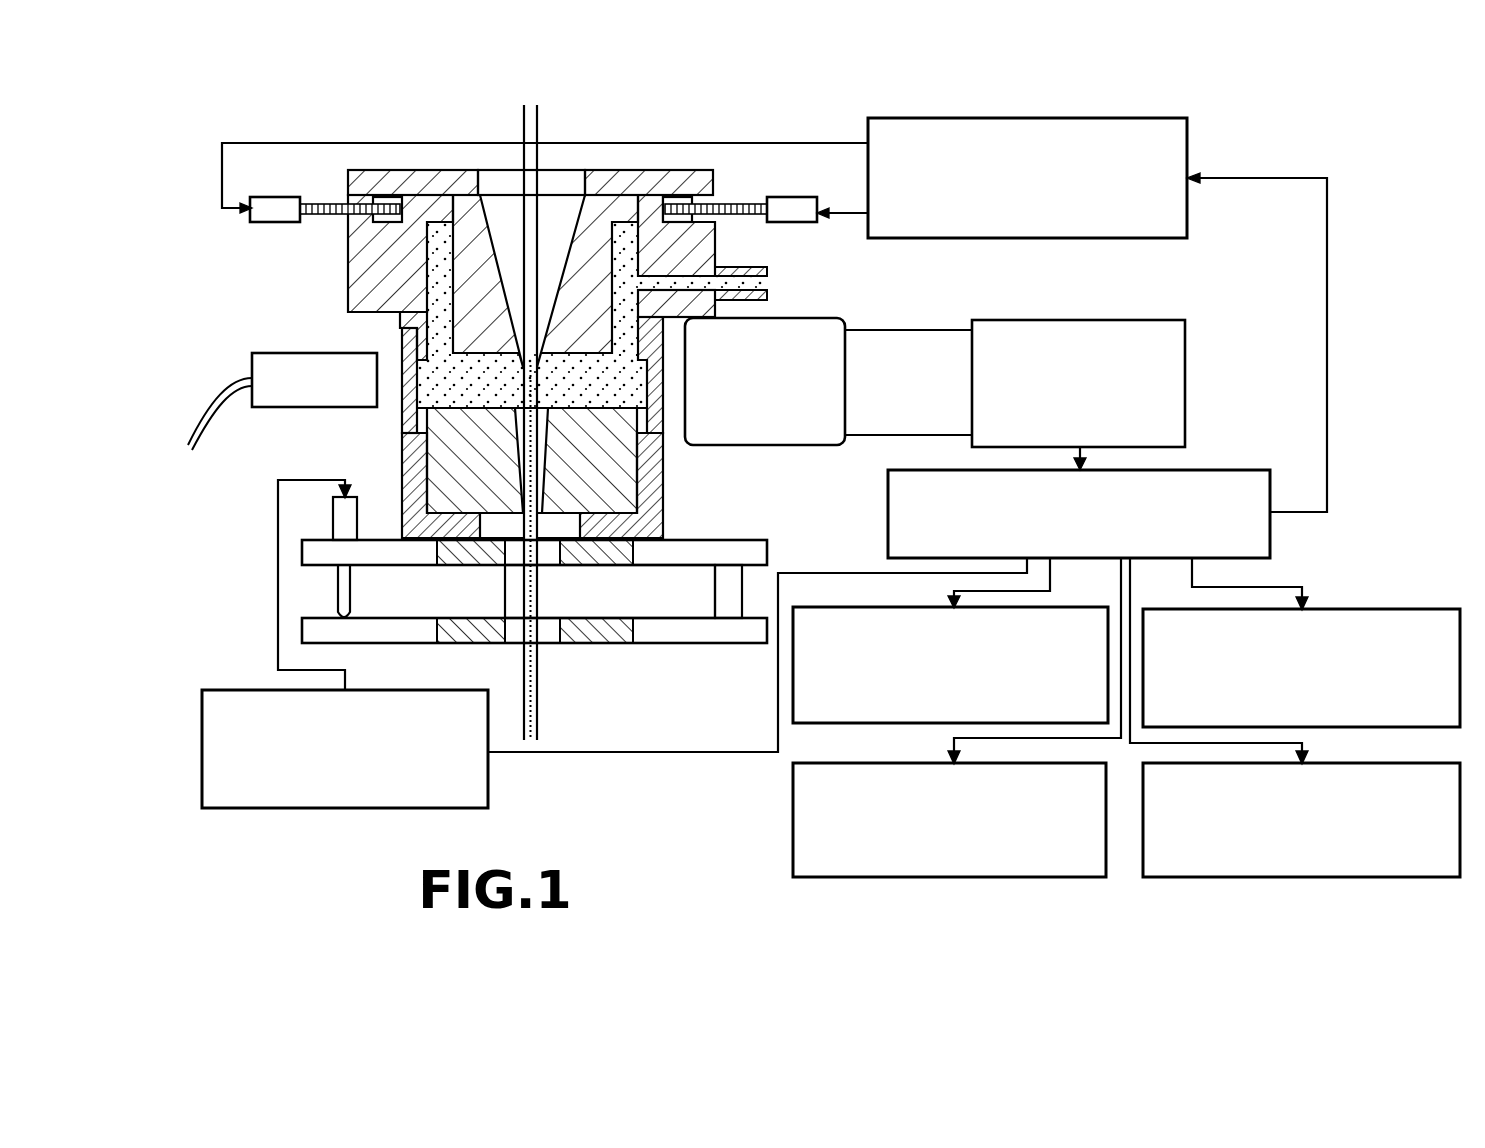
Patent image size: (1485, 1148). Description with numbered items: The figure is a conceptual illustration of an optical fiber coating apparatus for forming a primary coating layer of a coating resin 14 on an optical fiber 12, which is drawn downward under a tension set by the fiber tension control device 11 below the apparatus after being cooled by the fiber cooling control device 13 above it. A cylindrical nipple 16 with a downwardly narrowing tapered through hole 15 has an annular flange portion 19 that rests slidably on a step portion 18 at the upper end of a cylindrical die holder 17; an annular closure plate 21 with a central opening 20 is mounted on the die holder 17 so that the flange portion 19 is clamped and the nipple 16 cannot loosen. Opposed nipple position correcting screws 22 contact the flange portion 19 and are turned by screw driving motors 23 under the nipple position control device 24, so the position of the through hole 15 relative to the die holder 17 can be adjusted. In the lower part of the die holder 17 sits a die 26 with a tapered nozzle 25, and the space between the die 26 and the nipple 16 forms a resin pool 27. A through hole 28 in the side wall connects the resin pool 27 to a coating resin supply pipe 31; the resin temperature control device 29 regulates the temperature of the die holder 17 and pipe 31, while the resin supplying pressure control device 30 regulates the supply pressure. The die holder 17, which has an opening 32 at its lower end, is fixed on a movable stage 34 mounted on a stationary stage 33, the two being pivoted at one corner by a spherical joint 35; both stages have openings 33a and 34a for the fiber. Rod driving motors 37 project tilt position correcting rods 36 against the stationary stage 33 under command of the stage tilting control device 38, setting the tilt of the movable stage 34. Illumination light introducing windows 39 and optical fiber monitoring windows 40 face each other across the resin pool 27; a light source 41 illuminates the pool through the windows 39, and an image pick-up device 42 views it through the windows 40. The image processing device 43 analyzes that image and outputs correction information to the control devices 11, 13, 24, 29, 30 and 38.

The fiber tension control device 11 is at (1398, 763).
The optical fiber 12 is at (538, 128).
The fiber cooling control device 13 is at (1378, 609).
The coating resin 14 is at (443, 308).
The tapered through hole 15 is at (562, 218).
The nipple 16 is at (473, 262).
The die holder 17 is at (650, 503).
The step portion 18 is at (387, 212).
The flange portion 19 is at (428, 203).
The opening 20 is at (503, 183).
The closure plate 21 is at (360, 173).
The nipple position correcting screws 22 is at (320, 203).
The screw driving motors 23 is at (273, 220).
The nipple position control device 24 is at (1027, 118).
The tapered nozzle 25 is at (552, 470).
The die 26 is at (453, 462).
The resin pool 27 is at (437, 375).
The through hole 28 is at (685, 283).
The resin temperature control device 29 is at (853, 607).
The resin supplying pressure control device 30 is at (880, 763).
The coating resin supply pipe 31 is at (757, 303).
The opening 32 is at (632, 566).
The stationary stage 33 is at (697, 643).
The opening 33a is at (550, 634).
The movable stage 34 is at (768, 556).
The opening 34a is at (505, 566).
The spherical joint 35 is at (722, 590).
The tilt position correcting rods 36 is at (352, 590).
The rod driving motors 37 is at (333, 520).
The stage tilting control device 38 is at (240, 690).
The illumination light introducing windows 39 is at (405, 400).
The optical fiber monitoring windows 40 is at (657, 395).
The light source 41 is at (278, 397).
The image pick-up device 42 is at (1086, 310).
The image processing device 43 is at (1205, 470).